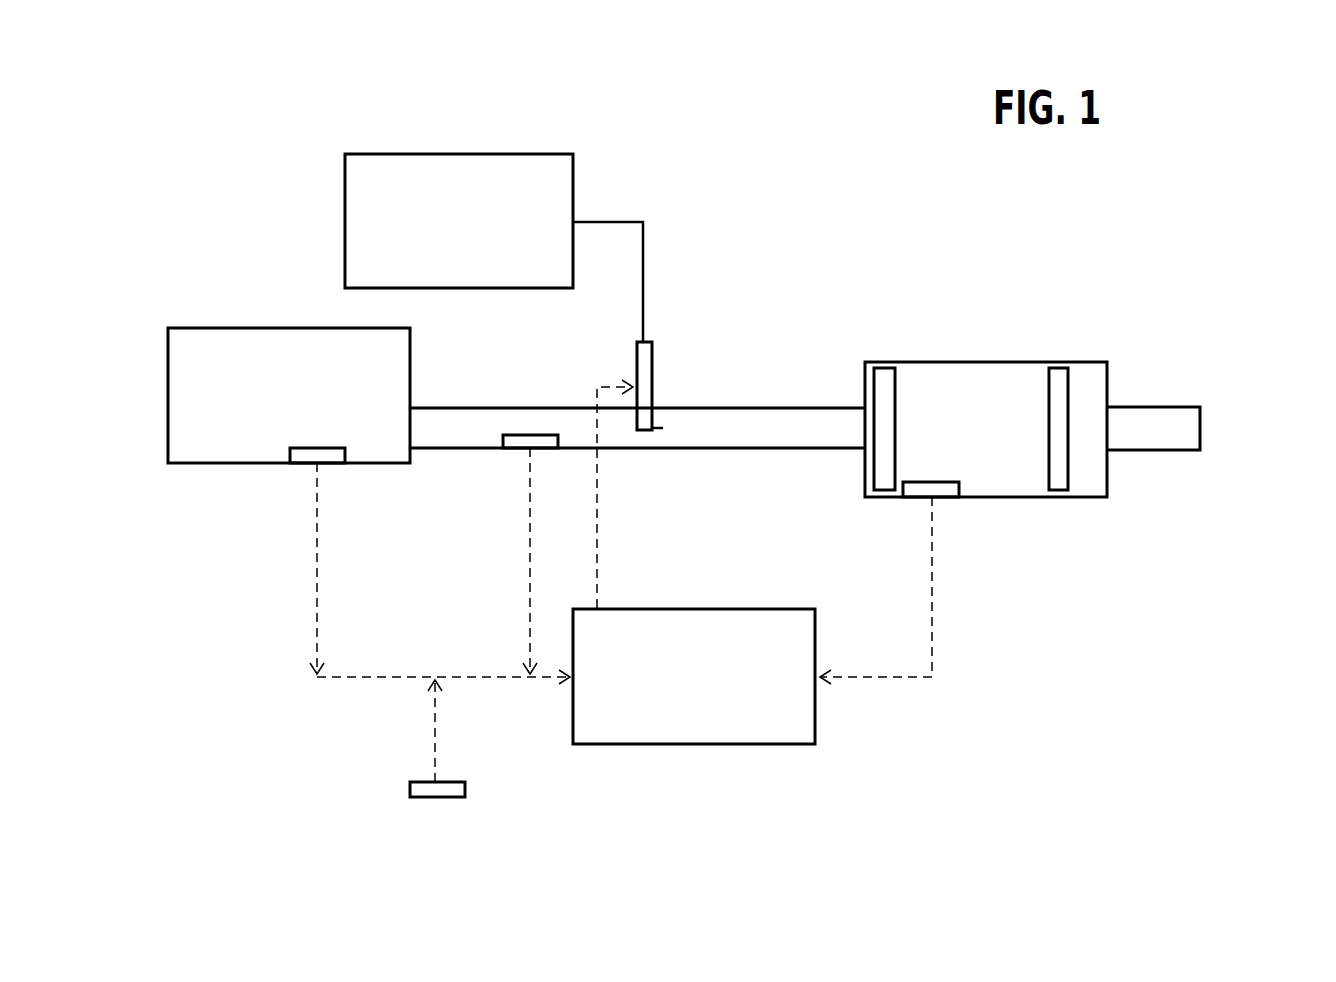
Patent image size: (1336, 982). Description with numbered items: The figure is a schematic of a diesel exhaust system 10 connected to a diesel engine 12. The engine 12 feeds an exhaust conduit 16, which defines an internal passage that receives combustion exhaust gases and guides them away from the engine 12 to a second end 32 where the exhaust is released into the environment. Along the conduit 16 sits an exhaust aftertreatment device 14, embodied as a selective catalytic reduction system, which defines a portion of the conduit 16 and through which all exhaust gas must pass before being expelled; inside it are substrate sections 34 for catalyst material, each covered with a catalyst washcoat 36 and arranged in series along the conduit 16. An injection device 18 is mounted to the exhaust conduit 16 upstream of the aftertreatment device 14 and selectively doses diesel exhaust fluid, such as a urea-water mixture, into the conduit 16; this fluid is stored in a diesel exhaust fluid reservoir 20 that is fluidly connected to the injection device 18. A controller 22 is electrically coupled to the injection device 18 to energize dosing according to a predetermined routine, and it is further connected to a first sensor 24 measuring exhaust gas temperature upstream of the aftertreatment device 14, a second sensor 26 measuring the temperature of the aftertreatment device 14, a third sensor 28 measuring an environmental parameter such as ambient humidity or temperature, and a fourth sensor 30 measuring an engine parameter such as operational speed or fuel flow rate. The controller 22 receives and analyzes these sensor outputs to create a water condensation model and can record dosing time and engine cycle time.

The diesel exhaust system 10 is at (266, 121).
The diesel engine 12 is at (222, 328).
The exhaust aftertreatment device 14 is at (985, 360).
The exhaust conduit 16 is at (750, 452).
The injection device 18 is at (654, 360).
The diesel exhaust fluid reservoir 20 is at (505, 153).
The controller 22 is at (785, 746).
The first sensor 24 is at (517, 450).
The second sensor 26 is at (918, 498).
The third sensor 28 is at (458, 798).
The fourth sensor 30 is at (331, 465).
The second end 32 is at (1207, 430).
The substrate 34 is at (883, 380).
The catalyst washcoat 36 is at (900, 392).